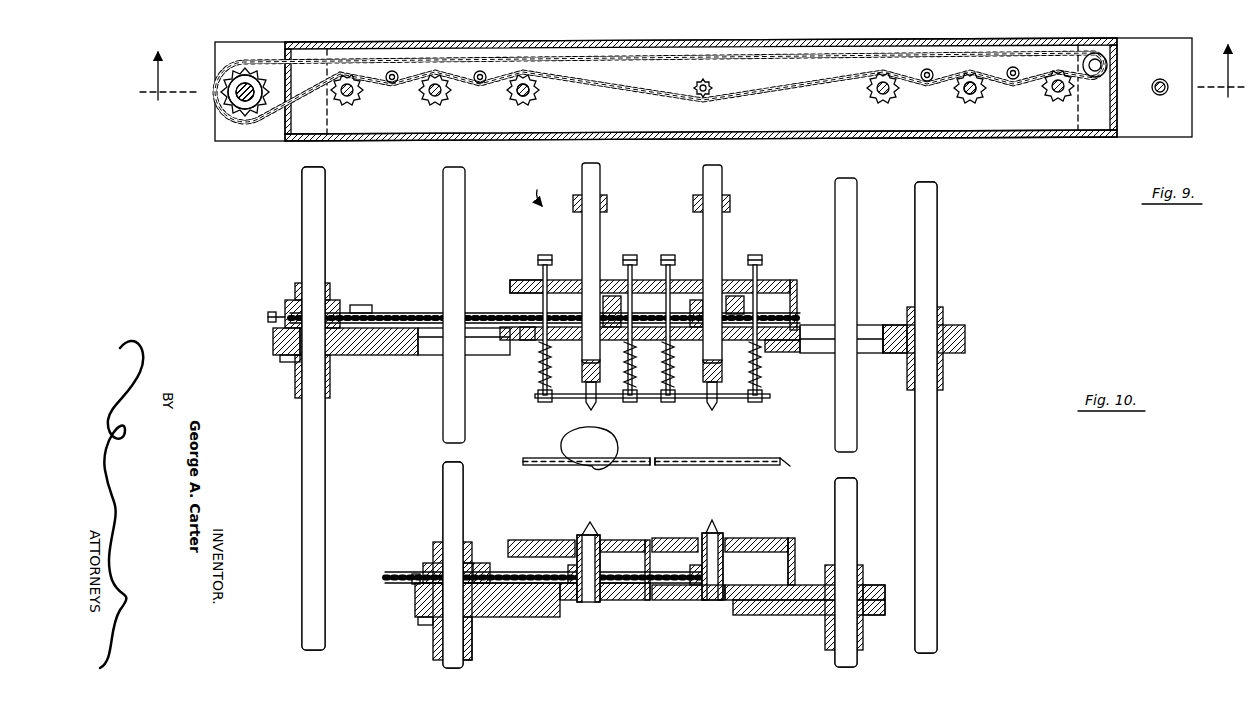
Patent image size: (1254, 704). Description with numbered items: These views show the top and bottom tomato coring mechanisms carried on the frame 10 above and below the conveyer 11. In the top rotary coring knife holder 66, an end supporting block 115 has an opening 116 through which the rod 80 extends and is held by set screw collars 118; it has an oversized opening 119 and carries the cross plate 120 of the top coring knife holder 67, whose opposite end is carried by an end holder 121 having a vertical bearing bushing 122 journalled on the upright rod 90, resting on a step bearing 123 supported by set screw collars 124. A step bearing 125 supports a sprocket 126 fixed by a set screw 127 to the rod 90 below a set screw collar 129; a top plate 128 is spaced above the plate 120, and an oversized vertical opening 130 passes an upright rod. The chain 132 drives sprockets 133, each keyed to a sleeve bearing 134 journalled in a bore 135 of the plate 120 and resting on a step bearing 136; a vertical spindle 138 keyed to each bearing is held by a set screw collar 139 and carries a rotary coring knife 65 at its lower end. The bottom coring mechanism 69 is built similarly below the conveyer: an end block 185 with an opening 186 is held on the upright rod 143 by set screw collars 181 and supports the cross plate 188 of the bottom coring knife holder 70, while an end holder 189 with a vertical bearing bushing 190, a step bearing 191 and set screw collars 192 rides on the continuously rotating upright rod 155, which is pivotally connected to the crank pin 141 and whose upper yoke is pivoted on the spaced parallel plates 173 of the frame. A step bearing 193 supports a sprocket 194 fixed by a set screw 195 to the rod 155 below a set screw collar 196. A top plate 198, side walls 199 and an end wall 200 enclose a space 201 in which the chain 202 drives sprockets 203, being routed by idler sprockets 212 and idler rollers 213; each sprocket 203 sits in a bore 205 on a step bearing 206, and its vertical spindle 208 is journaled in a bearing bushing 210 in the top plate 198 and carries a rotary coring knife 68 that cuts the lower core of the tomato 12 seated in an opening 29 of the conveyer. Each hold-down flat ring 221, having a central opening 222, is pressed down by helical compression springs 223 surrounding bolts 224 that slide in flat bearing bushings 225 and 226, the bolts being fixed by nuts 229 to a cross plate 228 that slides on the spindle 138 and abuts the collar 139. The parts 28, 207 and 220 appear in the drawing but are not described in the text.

In FIG. 9, the frame 10 is at (694, 87).
In FIG. 10, the conveyer 11 is at (783, 458).
In FIG. 10, the tomato 12 is at (560, 445).
In FIG. 10, the gap 28 is at (650, 457).
In FIG. 10, the opening 29 is at (612, 472).
In FIG. 10, the rotary coring knife 65 is at (587, 403).
In FIG. 10, the top rotary coring knife holder 66 is at (527, 192).
In FIG. 10, the top coring knife holder 67 is at (796, 283).
In FIG. 10, the rotary coring knife 68 is at (712, 528).
In FIG. 10, the bottom coring mechanism 69 is at (660, 615).
In FIG. 9, the bottom rotary coring knife holder 70 is at (848, 37).
In FIG. 10, the bottom rotary coring knife holder 70 is at (790, 540).
In FIG. 10, the rod 80 is at (937, 474).
In FIG. 10, the upright rod 90 is at (302, 490).
In FIG. 9, the end supporting plate or block 115 is at (1235, 4).
In FIG. 10, the end supporting plate or block 115 is at (962, 335).
In FIG. 10, the opening 116 is at (908, 345).
In FIG. 10, the set screw collars 118 is at (943, 312).
In FIG. 10, the opening 119 is at (870, 353).
In FIG. 9, the cross plate 120 is at (1148, 4).
In FIG. 10, the cross plate 120 is at (790, 330).
In FIG. 10, the end holder 121 is at (383, 358).
In FIG. 10, the vertical bearing bushing 122 is at (273, 342).
In FIG. 10, the step bearing 123 is at (284, 362).
In FIG. 10, the set screw collars 124 is at (296, 388).
In FIG. 10, the step bearing 125 is at (270, 323).
In FIG. 9, the sprocket 126 is at (131, 4).
In FIG. 10, the sprocket 126 is at (288, 302).
In FIG. 10, the set screw 127 is at (335, 302).
In FIG. 10, the top plate 128 is at (788, 282).
In FIG. 9, the set screw collar 129 is at (448, 4).
In FIG. 10, the set screw collar 129 is at (297, 285).
In FIG. 10, the vertical opening 130 is at (430, 358).
In FIG. 10, the chain 132 is at (425, 313).
In FIG. 10, the sprockets 133 is at (745, 305).
In FIG. 10, the sleeve bearing 134 is at (583, 355).
In FIG. 10, the bore 135 is at (698, 328).
In FIG. 10, the step bearing 136 is at (722, 362).
In FIG. 10, the vertical spindle 138 is at (592, 228).
In FIG. 10, the set screw collar 139 is at (603, 200).
In FIG. 9, the crank pin 141 is at (714, 4).
In FIG. 9, the upright rod 143 is at (1160, 79).
In FIG. 9, the upright rod 155 is at (245, 88).
In FIG. 10, the upright rod 155 is at (448, 462).
In FIG. 10, the spaced parallel plates 173 is at (857, 478).
In FIG. 10, the set screw collars 181 is at (856, 580).
In FIG. 9, the end supporting plate or block 185 is at (1152, 138).
In FIG. 10, the end supporting plate or block 185 is at (795, 615).
In FIG. 10, the opening 186 is at (868, 600).
In FIG. 9, the cross plate 188 is at (1022, 137).
In FIG. 10, the cross plate 188 is at (760, 615).
In FIG. 9, the end holder 189 is at (222, 138).
In FIG. 10, the end holder 189 is at (540, 617).
In FIG. 10, the vertical bearing bushing 190 is at (415, 605).
In FIG. 10, the step bearing 191 is at (422, 624).
In FIG. 10, the set screw collars 192 is at (466, 635).
In FIG. 10, the step bearing 193 is at (412, 581).
In FIG. 9, the sprocket 194 is at (232, 86).
In FIG. 10, the sprocket 194 is at (425, 565).
In FIG. 10, the set screw 195 is at (488, 565).
In FIG. 9, the set screw collar 196 is at (232, 98).
In FIG. 10, the set screw collar 196 is at (466, 545).
In FIG. 9, the top plate 198 is at (438, 4).
In FIG. 10, the top plate 198 is at (778, 540).
In FIG. 9, the side walls 199 is at (780, 40).
In FIG. 9, the end wall 200 is at (1118, 108).
In FIG. 10, the end wall 200 is at (808, 565).
In FIG. 9, the space 201 is at (820, 133).
In FIG. 10, the space 201 is at (552, 575).
In FIG. 9, the chain 202 is at (652, 93).
In FIG. 10, the chain 202 is at (540, 545).
In FIG. 9, the sprockets 203 is at (355, 100).
In FIG. 10, the sprockets 203 is at (692, 565).
In FIG. 10, the bore 205 is at (615, 595).
In FIG. 10, the step bearing 206 is at (585, 600).
In FIG. 10, the plate 207 is at (620, 553).
In FIG. 9, the vertical spindle 208 is at (532, 94).
In FIG. 10, the vertical spindle 208 is at (578, 545).
In FIG. 10, the bearing bushing 210 is at (616, 514).
In FIG. 9, the idler sprockets 212 is at (712, 86).
In FIG. 9, the idler rollers 213 is at (393, 71).
In FIG. 10, the bolt 220 is at (746, 288).
In FIG. 10, the flat ring 221 is at (770, 396).
In FIG. 10, the central opening 222 is at (720, 396).
In FIG. 10, the helical compression springs 223 is at (666, 401).
In FIG. 10, the bolt 224 is at (540, 258).
In FIG. 10, the flat bearing bushing 225 is at (518, 342).
In FIG. 10, the flat bearing bushing 226 is at (520, 283).
In FIG. 10, the cross plate 228 is at (615, 297).
In FIG. 10, the nuts 229 is at (634, 282).